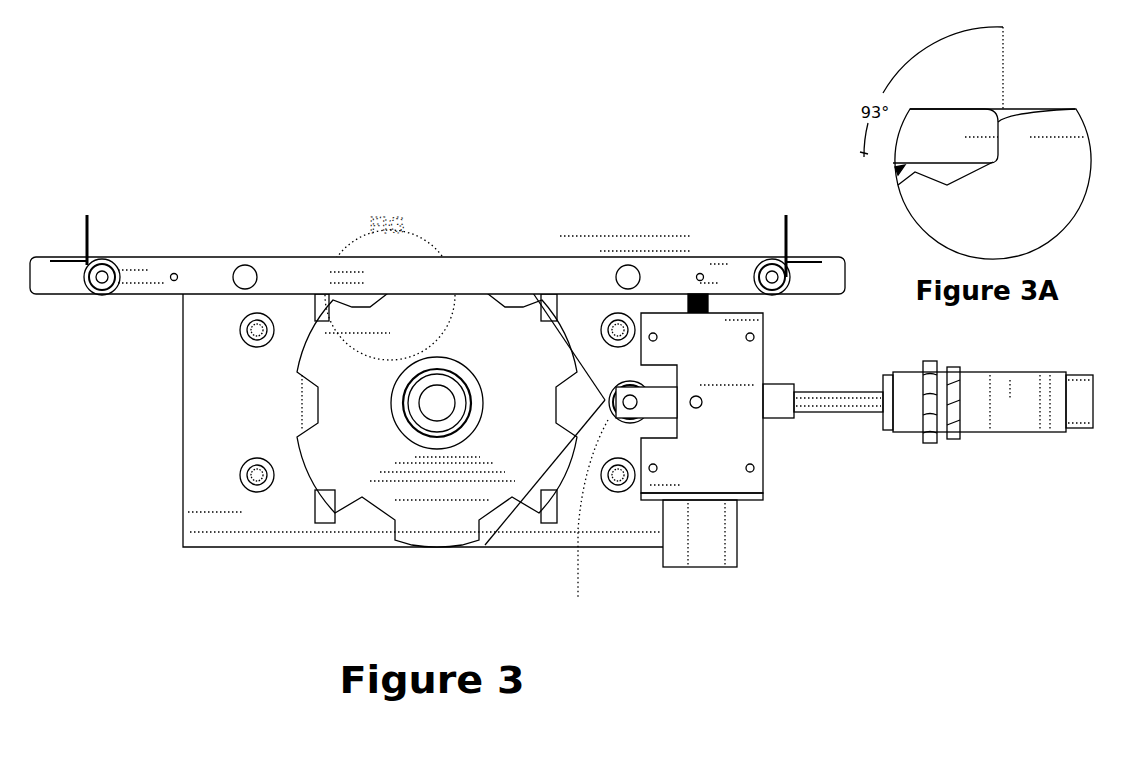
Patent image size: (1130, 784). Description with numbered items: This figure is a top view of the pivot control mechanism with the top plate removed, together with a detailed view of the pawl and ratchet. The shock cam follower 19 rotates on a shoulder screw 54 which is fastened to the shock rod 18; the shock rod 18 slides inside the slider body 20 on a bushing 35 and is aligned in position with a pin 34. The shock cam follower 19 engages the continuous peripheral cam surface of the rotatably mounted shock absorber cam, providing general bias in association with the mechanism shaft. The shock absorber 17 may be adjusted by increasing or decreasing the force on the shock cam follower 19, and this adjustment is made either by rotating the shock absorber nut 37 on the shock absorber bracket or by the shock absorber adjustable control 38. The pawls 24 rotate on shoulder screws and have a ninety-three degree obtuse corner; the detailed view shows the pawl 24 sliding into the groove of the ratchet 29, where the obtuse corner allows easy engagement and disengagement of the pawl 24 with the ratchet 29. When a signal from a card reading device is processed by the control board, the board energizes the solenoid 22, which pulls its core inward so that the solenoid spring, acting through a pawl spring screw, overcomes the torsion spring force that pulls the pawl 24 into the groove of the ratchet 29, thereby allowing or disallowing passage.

In FIG. 3, the shock absorber 17 is at (1010, 420).
In FIG. 3, the shock rod 18 is at (797, 388).
In FIG. 3, the shock cam follower 19 is at (608, 392).
In FIG. 3, the slider body 20 is at (770, 489).
In FIG. 3, the solenoid 22 is at (690, 531).
In FIG. 3, the pawl 24 is at (195, 286).
In FIG. 3A, the pawl 24 is at (921, 139).
In FIG. 3, the ratchet 29 is at (333, 467).
In FIG. 3A, the ratchet 29 is at (1043, 199).
In FIG. 3, the pin 34 is at (702, 406).
In FIG. 3, the bushing 35 is at (767, 383).
In FIG. 3, the shock absorber nut 37 is at (960, 440).
In FIG. 3, the shock absorber adjustable control 38 is at (1083, 415).
In FIG. 3, the shoulder screw 54 is at (584, 522).